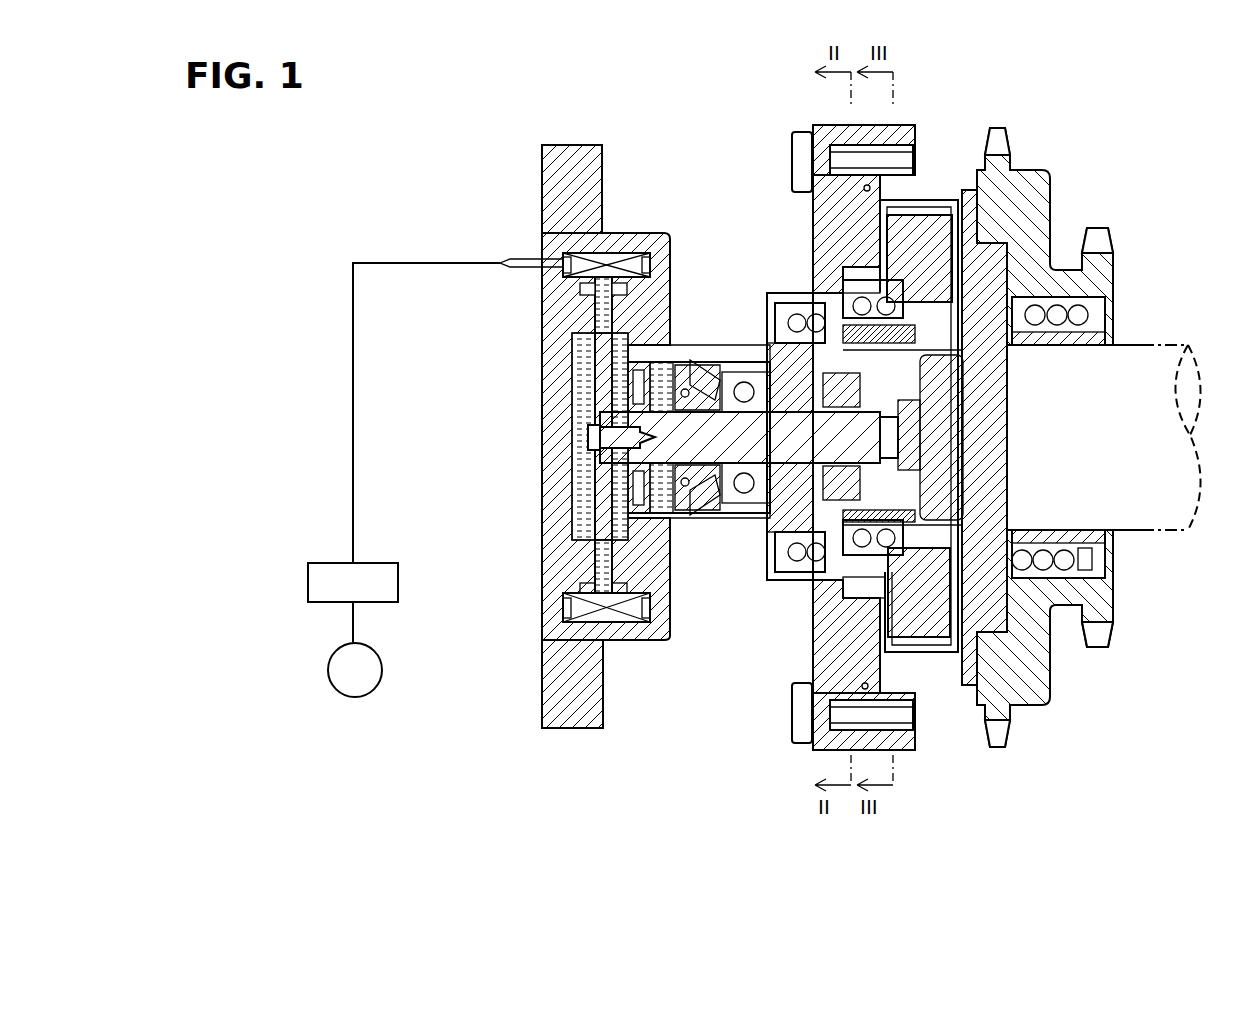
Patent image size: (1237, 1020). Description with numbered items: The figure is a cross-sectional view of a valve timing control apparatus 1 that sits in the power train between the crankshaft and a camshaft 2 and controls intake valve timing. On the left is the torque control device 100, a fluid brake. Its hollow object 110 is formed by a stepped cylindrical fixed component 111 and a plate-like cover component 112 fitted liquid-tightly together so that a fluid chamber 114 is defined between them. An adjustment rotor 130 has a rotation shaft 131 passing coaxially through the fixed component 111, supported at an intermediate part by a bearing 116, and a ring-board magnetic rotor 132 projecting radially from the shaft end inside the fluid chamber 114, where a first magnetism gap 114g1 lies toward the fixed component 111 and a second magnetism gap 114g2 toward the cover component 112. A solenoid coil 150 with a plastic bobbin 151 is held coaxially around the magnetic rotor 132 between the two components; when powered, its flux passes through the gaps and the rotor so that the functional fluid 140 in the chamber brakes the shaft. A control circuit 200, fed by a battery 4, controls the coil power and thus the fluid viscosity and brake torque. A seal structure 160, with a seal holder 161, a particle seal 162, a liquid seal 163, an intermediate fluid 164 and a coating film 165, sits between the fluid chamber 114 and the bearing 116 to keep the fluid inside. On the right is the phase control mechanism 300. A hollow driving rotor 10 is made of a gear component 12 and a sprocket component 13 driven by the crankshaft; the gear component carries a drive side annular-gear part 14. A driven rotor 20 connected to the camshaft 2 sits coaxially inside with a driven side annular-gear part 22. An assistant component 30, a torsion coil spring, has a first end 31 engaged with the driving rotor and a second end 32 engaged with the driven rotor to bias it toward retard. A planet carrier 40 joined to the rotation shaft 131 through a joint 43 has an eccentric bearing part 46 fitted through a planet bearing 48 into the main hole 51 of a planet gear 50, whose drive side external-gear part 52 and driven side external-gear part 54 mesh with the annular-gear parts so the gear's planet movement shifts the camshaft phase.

The valve timing control apparatus 1 is at (703, 780).
The camshaft 2 is at (1140, 532).
The battery 4 is at (343, 697).
The driving rotor 10 is at (818, 92).
The gear component 12 is at (800, 140).
The sprocket component 13 is at (855, 140).
The drive side annular-gear part 14 is at (850, 615).
The driven rotor 20 is at (1012, 228).
The driven side annular-gear part 22 is at (1000, 700).
The assistant component 30 is at (1060, 582).
The first end 31 is at (1114, 600).
The second end 32 is at (1085, 572).
The planet carrier 40 is at (995, 236).
The joint 43 is at (795, 303).
The bearing part 46 is at (830, 625).
The planet bearing 48 is at (935, 240).
The planet gear 50 is at (990, 786).
The main hole 51 is at (890, 290).
The drive side external-gear part 52 is at (905, 650).
The driven side external-gear part 54 is at (925, 600).
The torque control device 100 is at (595, 732).
The hollow object 110 is at (445, 150).
The fixed component 111 is at (560, 178).
The cover component 112 is at (560, 242).
The fluid chamber 114 is at (615, 258).
The first magnetism gap 114g1 is at (630, 300).
The second magnetism gap 114g2 is at (600, 302).
The bearing 116 is at (745, 505).
The adjustment rotor 130 is at (445, 355).
The rotation shaft 131 is at (625, 436).
The magnetic rotor 132 is at (580, 398).
The functional fluid 140 is at (630, 386).
The solenoid coil 150 is at (620, 252).
The bobbin 151 is at (600, 252).
The seal structure 160 is at (645, 478).
The seal holder 161 is at (662, 520).
The particle seal 162 is at (640, 535).
The liquid seal 163 is at (700, 517).
The intermediate fluid 164 is at (665, 517).
The coating film 165 is at (672, 398).
The control circuit 200 is at (402, 604).
The phase control mechanism 300 is at (785, 742).